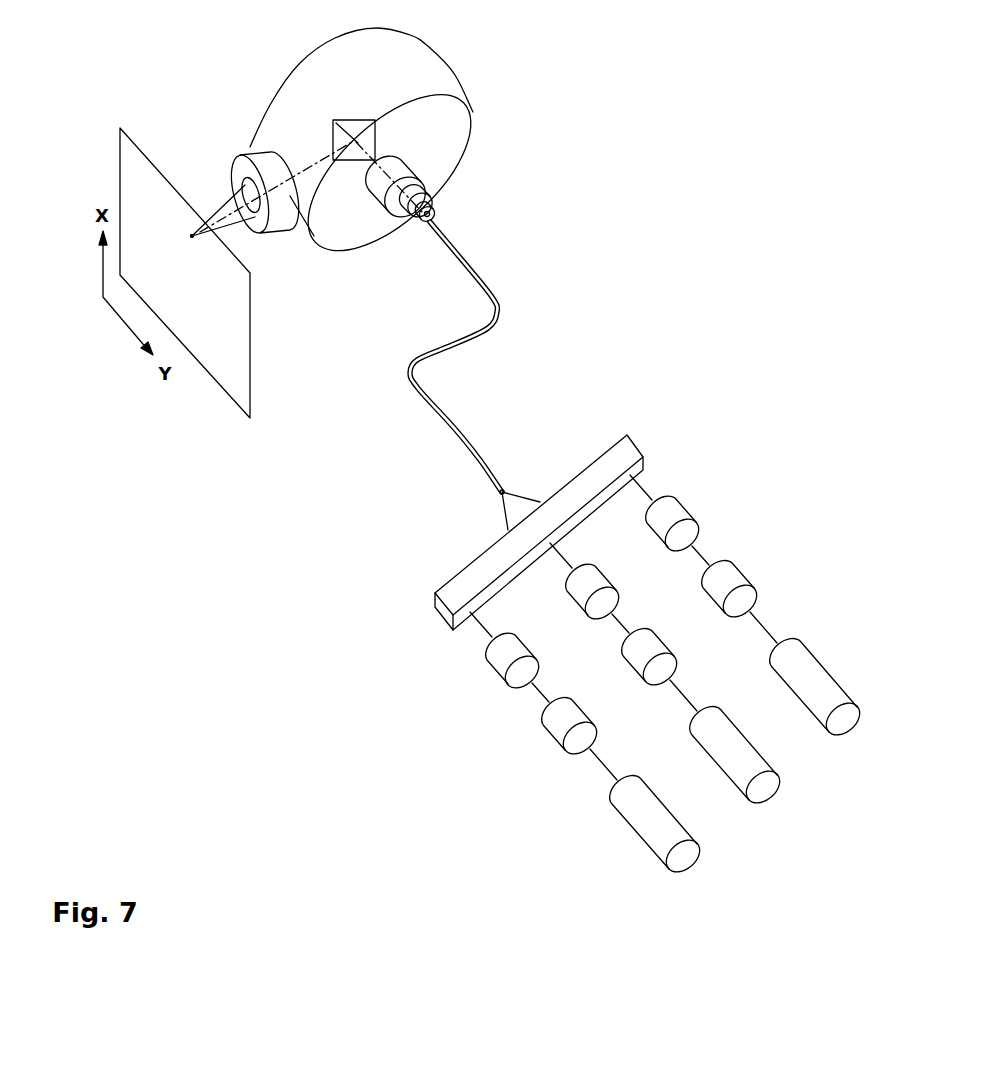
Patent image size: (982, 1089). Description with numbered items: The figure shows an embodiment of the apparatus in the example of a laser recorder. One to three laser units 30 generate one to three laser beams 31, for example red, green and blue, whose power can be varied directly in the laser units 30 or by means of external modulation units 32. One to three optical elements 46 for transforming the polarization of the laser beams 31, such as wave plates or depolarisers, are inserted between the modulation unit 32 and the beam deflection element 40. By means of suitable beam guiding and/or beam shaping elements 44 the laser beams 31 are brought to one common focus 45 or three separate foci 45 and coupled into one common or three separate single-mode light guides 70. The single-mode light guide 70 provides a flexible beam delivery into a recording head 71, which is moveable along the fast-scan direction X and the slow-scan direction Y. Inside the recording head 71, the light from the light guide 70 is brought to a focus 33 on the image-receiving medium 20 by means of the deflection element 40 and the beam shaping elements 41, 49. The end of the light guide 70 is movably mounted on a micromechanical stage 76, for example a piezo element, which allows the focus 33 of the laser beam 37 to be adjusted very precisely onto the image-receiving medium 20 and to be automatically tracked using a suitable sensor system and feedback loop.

The image-receiving medium 20 is at (240, 372).
The focus 33 is at (192, 236).
The laser beam 37 is at (250, 273).
The beam shaping element 41 is at (262, 160).
The recording head 71 is at (413, 65).
The deflection element 40 is at (340, 120).
The beam shaping element 49 is at (410, 167).
The micromechanical stage 76 is at (430, 204).
The single-mode light guide 70 is at (497, 303).
The focus 45 is at (502, 492).
The beam guiding and/or beam shaping element 44 is at (600, 478).
The optical element for transforming polarization 46 is at (598, 592).
The laser beam 31 is at (763, 620).
The external modulation unit 32 is at (727, 583).
The laser unit 30 is at (820, 680).